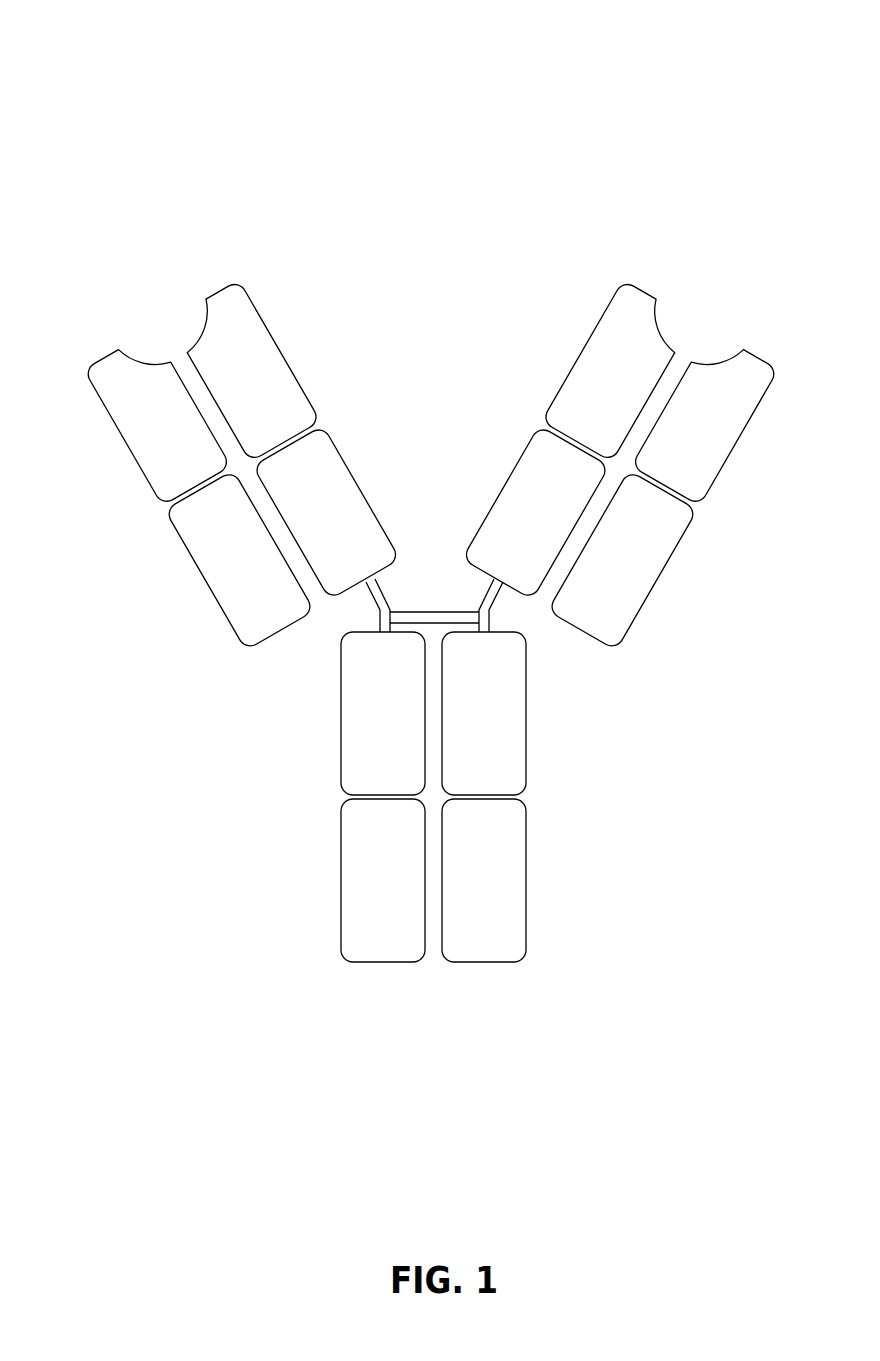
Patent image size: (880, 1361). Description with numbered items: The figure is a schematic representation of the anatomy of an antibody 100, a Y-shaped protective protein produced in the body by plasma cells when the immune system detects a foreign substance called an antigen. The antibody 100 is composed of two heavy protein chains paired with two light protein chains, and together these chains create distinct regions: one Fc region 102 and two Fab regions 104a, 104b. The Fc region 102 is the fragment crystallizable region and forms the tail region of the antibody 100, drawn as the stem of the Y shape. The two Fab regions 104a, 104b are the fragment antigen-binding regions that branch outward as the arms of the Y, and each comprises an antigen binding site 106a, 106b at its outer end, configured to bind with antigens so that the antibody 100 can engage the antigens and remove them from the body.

The antibody 100 is at (435, 499).
The Fc region 102 is at (379, 778).
The Fab region 104a is at (222, 455).
The Fab region 104b is at (644, 451).
The antigen binding site 106a is at (191, 386).
The antigen binding site 106b is at (667, 381).